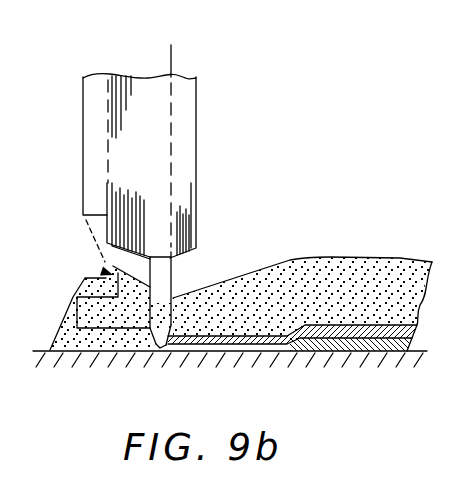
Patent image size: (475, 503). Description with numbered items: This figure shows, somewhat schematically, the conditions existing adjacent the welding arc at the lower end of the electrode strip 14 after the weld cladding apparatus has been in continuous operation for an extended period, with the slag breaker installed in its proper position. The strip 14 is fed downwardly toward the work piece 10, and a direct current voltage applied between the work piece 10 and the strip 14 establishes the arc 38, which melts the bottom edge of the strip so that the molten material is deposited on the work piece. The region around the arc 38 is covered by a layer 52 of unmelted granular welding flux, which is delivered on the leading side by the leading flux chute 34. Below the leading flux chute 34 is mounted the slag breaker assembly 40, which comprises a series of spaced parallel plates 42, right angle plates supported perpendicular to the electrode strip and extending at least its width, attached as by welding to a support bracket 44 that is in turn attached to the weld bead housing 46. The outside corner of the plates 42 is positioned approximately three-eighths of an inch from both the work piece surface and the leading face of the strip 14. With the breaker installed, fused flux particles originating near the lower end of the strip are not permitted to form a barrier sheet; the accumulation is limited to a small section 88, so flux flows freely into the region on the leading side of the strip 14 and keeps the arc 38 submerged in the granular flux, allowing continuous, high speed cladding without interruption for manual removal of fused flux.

The work piece 10 is at (43, 350).
The electrode strip 14 is at (173, 278).
The leading flux chute 34 is at (83, 139).
The arc 38 is at (173, 343).
The slag breaker assembly 40 is at (102, 271).
The spaced parallel plates 42 is at (92, 322).
The support bracket 44 is at (107, 202).
The weld bead housing 46 is at (197, 148).
The layer of unmelted welding flux 52 is at (355, 258).
The small section 88 is at (150, 348).